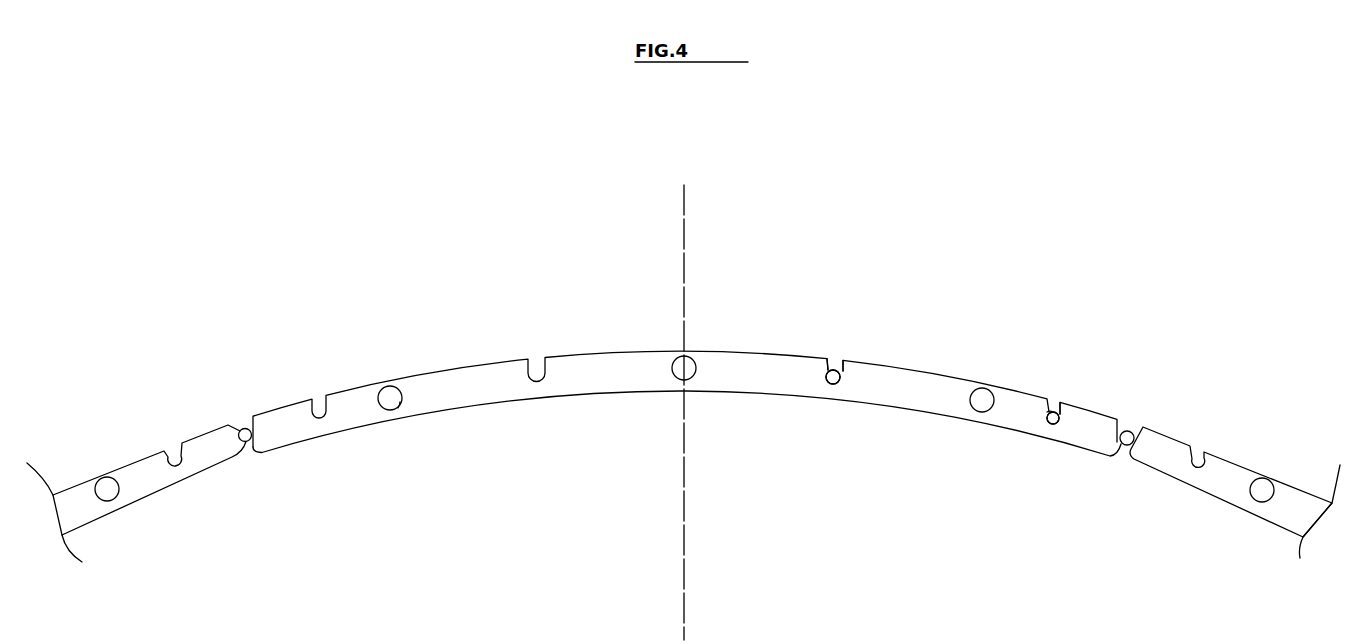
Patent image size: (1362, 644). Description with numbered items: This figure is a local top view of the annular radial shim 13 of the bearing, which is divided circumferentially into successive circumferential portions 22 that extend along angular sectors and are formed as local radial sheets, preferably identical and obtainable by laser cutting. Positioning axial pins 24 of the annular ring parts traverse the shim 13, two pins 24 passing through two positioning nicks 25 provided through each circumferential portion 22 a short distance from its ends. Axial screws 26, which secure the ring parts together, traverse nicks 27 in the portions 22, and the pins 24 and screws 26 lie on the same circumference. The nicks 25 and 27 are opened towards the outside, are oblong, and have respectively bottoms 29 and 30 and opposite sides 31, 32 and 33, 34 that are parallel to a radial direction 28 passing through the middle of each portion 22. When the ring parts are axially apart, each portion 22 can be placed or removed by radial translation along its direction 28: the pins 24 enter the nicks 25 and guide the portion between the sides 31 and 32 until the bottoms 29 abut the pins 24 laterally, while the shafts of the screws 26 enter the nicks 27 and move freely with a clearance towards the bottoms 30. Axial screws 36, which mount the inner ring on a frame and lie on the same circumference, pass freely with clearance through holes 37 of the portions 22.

The annular radial shim 13 is at (132, 457).
The circumferential portion 22 is at (147, 490).
The positioning axial pin 24 is at (1052, 425).
The positioning nick 25 is at (1046, 413).
The axial screw 26 is at (833, 386).
The nick 27 is at (812, 376).
The radial direction 28 is at (682, 597).
The bottom of positioning nick 29 is at (1060, 425).
The bottom of nick 30 is at (840, 382).
The side of positioning nick 31 is at (1063, 403).
The side of positioning nick 32 is at (1052, 412).
The side of nick 33 is at (845, 366).
The side of nick 34 is at (829, 368).
The axial screw 36 is at (384, 400).
The hole 37 is at (400, 405).